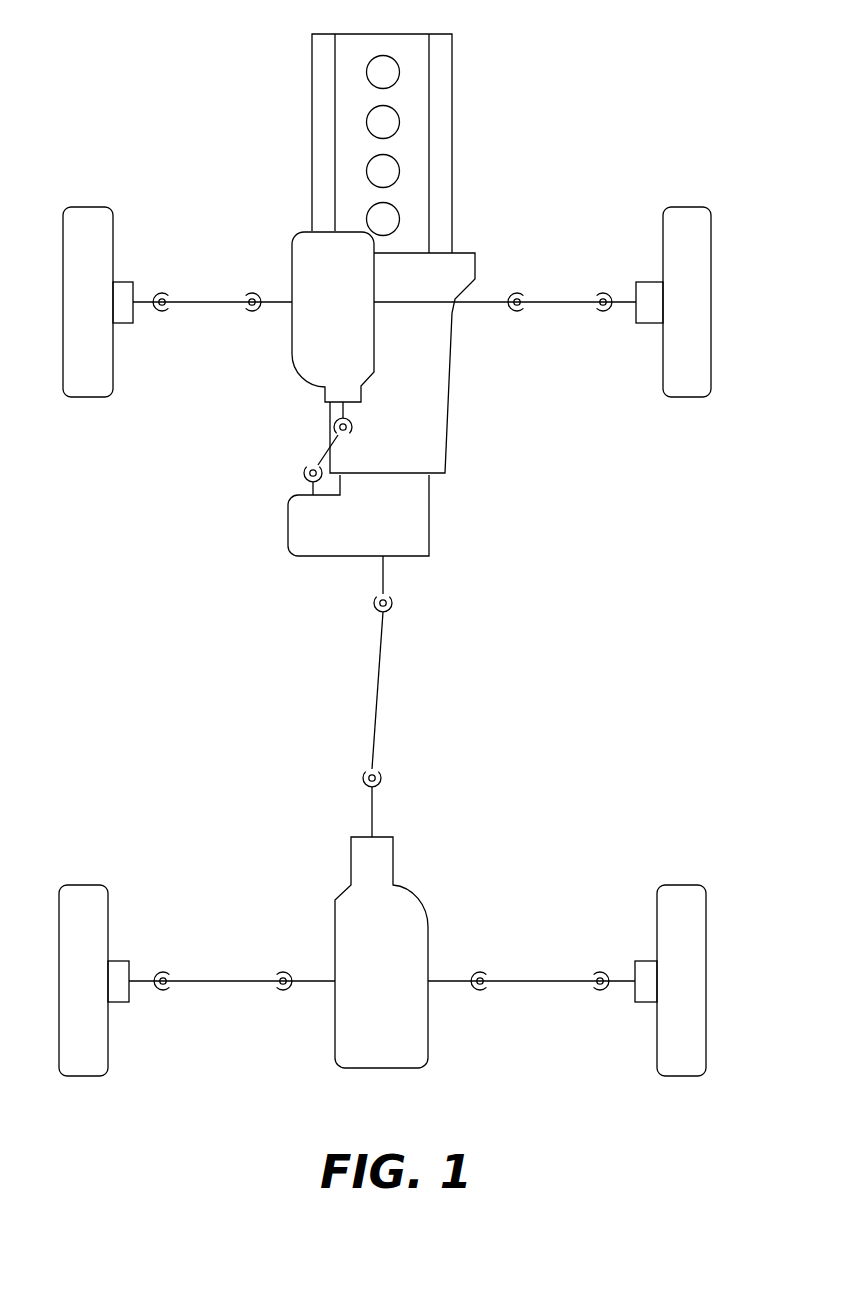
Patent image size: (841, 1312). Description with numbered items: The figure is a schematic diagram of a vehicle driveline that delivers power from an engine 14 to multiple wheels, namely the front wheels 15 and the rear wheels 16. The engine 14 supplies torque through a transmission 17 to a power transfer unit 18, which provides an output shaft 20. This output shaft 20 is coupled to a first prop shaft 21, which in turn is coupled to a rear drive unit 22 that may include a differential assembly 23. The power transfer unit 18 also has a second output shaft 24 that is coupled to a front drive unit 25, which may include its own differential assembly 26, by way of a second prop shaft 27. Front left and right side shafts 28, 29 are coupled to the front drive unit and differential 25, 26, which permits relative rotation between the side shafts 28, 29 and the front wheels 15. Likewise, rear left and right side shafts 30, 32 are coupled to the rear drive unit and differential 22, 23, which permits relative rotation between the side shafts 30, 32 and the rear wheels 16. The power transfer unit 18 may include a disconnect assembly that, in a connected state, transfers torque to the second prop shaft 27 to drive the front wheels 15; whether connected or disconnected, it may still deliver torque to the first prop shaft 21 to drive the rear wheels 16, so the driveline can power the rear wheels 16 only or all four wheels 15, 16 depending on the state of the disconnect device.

The engine 14 is at (452, 85).
The front wheels 15 is at (90, 207).
The rear wheels 16 is at (88, 885).
The transmission 17 is at (450, 368).
The power transfer unit 18 is at (429, 520).
The output shaft 20 is at (383, 575).
The first prop shaft 21 is at (383, 650).
The rear drive unit 22 is at (408, 980).
The differential assembly 23 is at (376, 1068).
The output shaft 24 is at (313, 489).
The front drive unit 25 is at (278, 317).
The differential assembly 26 is at (292, 346).
The second prop shaft 27 is at (327, 450).
The front left side shaft 28 is at (213, 290).
The front right side shaft 29 is at (563, 290).
The rear left side shaft 30 is at (224, 969).
The rear right side shaft 32 is at (545, 969).